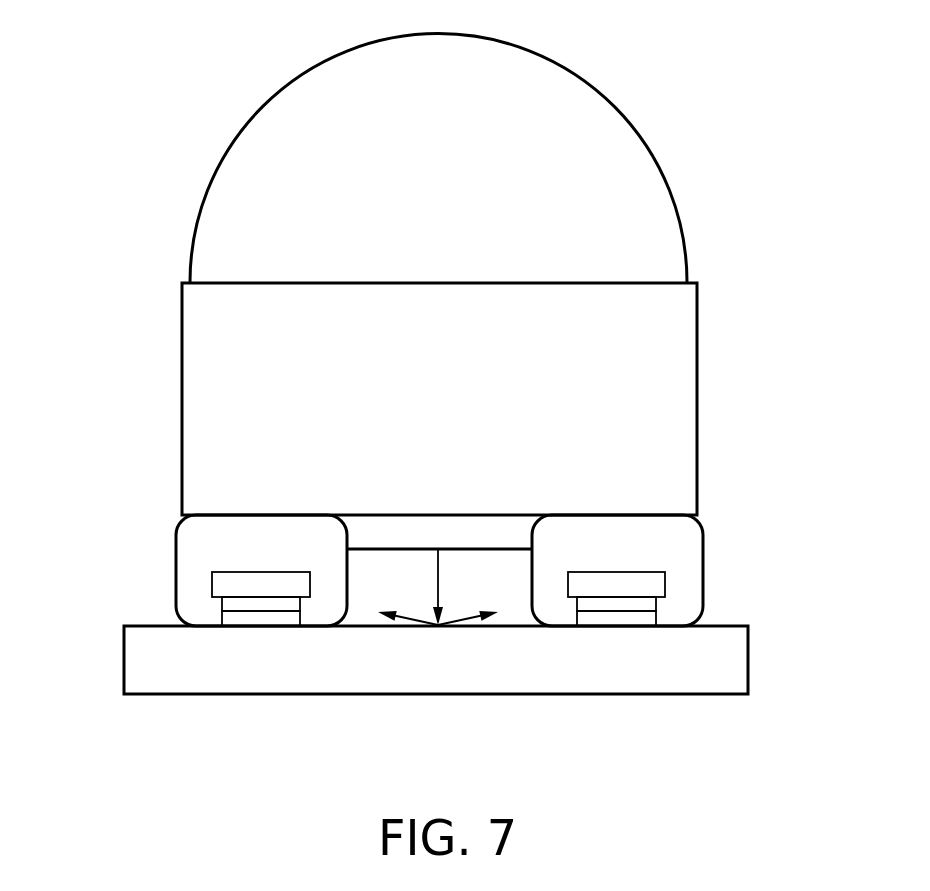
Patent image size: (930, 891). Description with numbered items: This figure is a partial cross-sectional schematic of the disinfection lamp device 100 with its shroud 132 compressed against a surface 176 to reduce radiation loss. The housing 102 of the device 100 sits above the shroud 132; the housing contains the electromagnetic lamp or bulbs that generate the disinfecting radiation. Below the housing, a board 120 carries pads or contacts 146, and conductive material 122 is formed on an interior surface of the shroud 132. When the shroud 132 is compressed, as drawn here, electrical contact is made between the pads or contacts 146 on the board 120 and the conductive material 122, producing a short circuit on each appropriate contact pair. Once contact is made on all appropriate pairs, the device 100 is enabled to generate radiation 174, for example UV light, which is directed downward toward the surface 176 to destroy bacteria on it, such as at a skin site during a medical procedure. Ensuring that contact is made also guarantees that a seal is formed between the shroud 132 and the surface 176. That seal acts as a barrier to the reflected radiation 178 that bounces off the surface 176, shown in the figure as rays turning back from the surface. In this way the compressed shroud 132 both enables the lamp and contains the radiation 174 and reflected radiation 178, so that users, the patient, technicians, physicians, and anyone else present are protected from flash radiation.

The disinfection lamp device 100 is at (118, 103).
The housing 102 is at (650, 203).
The board 120 is at (262, 572).
The conductive material 122 is at (222, 620).
The shroud 132 is at (175, 543).
The pads or contacts 146 is at (222, 604).
The radiation 174 is at (440, 578).
The surface 176 is at (363, 625).
The reflected radiation 178 is at (408, 624).